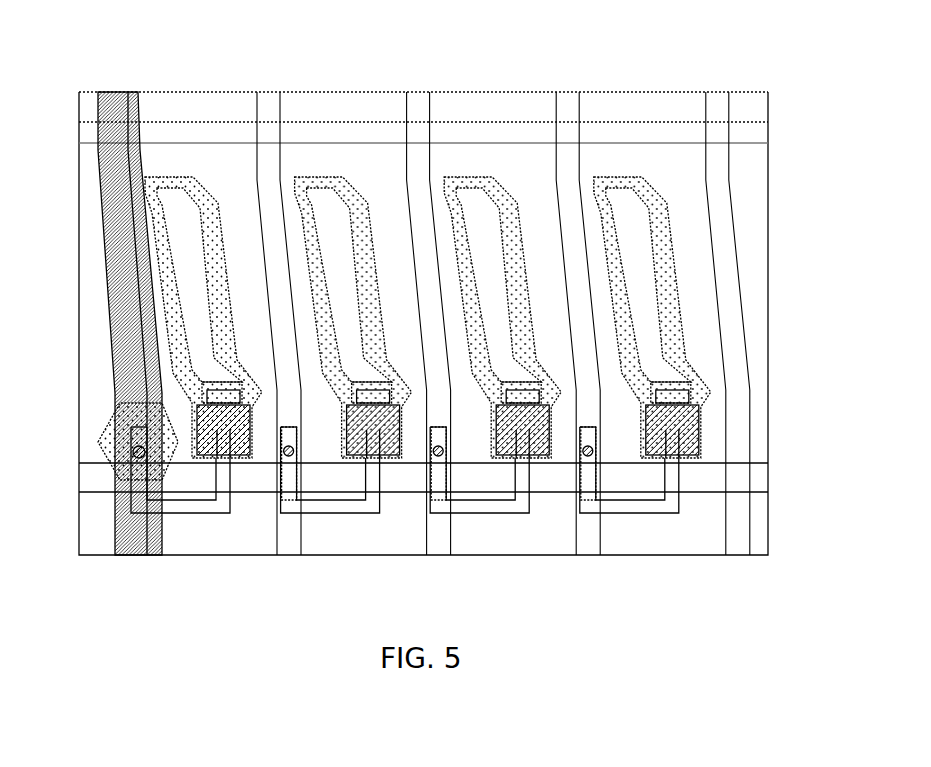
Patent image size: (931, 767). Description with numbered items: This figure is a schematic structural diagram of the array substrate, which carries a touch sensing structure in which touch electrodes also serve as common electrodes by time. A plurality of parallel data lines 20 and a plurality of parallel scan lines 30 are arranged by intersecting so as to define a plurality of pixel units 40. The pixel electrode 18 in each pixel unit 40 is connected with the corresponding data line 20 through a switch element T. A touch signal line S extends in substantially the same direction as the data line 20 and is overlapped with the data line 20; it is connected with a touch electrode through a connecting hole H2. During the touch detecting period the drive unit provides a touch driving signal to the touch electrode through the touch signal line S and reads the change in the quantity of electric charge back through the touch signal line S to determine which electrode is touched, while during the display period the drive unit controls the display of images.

The pixel unit 40 is at (677, 192).
The pixel electrode 18 is at (660, 305).
The data line 20 is at (730, 313).
The switch element T is at (707, 390).
The scan line 30 is at (702, 480).
The touch signal line S is at (114, 390).
The connecting hole H2 is at (110, 410).